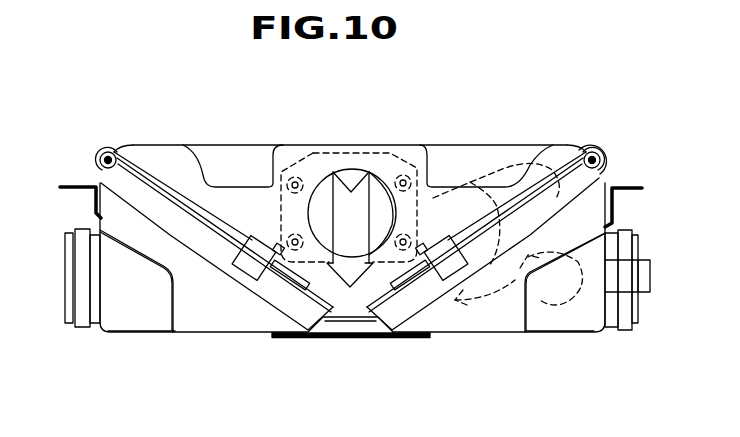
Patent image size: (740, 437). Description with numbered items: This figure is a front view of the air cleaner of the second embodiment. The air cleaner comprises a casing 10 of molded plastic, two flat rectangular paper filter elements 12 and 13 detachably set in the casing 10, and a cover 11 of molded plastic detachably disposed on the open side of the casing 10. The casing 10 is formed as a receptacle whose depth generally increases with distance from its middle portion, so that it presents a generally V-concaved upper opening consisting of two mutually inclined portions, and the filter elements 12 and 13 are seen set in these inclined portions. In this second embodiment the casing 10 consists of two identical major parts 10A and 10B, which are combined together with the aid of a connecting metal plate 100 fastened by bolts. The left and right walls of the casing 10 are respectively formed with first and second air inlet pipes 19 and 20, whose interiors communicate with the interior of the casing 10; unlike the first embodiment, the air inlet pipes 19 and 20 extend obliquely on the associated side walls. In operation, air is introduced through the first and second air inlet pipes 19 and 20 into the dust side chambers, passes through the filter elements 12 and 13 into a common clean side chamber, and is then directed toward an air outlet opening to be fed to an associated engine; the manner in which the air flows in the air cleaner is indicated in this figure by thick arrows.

The casing 10 is at (492, 333).
The major part of casing 10A is at (553, 333).
The major part of casing 10B is at (133, 333).
The cover 11 is at (482, 145).
The paper filter element 12 is at (115, 188).
The paper filter element 13 is at (577, 188).
The first air inlet pipe 19 is at (78, 252).
The second air inlet pipe 20 is at (646, 259).
The connecting metal plate 100 is at (395, 338).